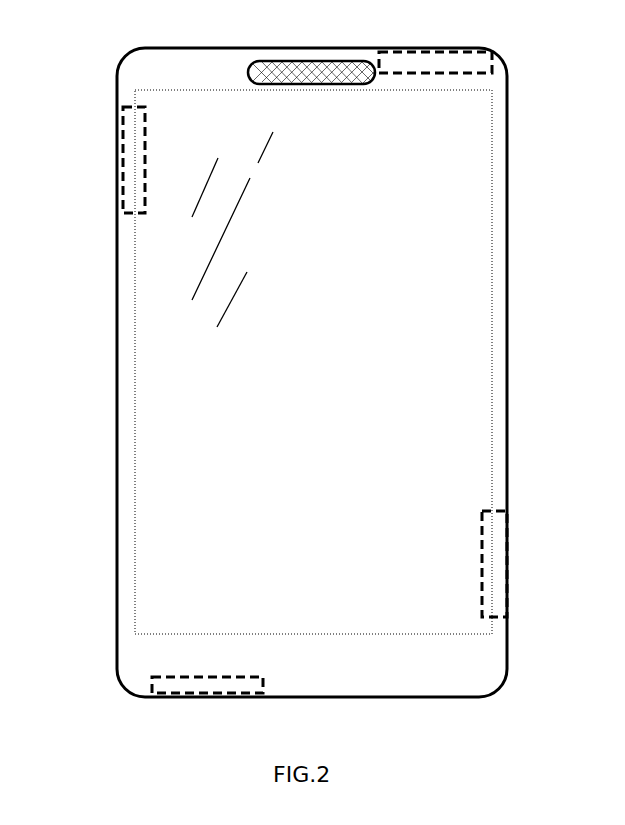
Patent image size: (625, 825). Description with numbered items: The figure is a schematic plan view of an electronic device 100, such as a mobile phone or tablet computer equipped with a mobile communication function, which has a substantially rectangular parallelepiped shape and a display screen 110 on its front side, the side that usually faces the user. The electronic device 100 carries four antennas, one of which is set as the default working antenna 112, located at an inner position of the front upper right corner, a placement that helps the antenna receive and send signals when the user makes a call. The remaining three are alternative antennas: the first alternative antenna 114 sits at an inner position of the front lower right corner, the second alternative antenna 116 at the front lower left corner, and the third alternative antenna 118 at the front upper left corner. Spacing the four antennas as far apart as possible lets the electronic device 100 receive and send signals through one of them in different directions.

The electronic device 100 is at (86, 63).
The display screen 110 is at (147, 383).
The default working antenna 112 is at (430, 52).
The first alternative antenna 114 is at (500, 552).
The second alternative antenna 116 is at (193, 693).
The third alternative antenna 118 is at (117, 117).